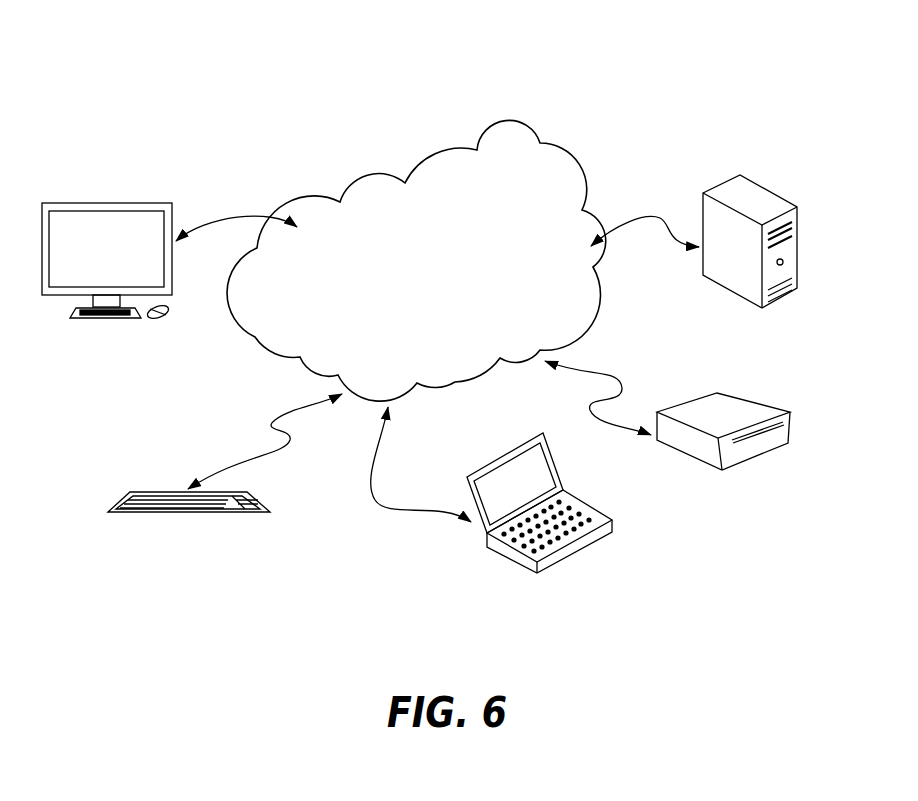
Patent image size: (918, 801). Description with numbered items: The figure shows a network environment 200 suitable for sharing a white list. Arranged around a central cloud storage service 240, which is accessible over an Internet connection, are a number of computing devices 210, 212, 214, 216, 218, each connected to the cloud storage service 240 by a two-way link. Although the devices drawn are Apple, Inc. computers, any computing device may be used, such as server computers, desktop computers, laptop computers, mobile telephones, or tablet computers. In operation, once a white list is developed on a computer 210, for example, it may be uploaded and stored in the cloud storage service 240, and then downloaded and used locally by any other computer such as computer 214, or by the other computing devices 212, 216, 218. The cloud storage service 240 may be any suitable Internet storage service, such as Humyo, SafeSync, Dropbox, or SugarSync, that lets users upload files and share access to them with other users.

The network environment 200 is at (528, 68).
The cloud storage service 240 is at (526, 199).
The computing device 212 is at (142, 210).
The computer 214 is at (735, 183).
The computing device 216 is at (735, 457).
The computing device 218 is at (513, 563).
The computer 210 is at (217, 500).